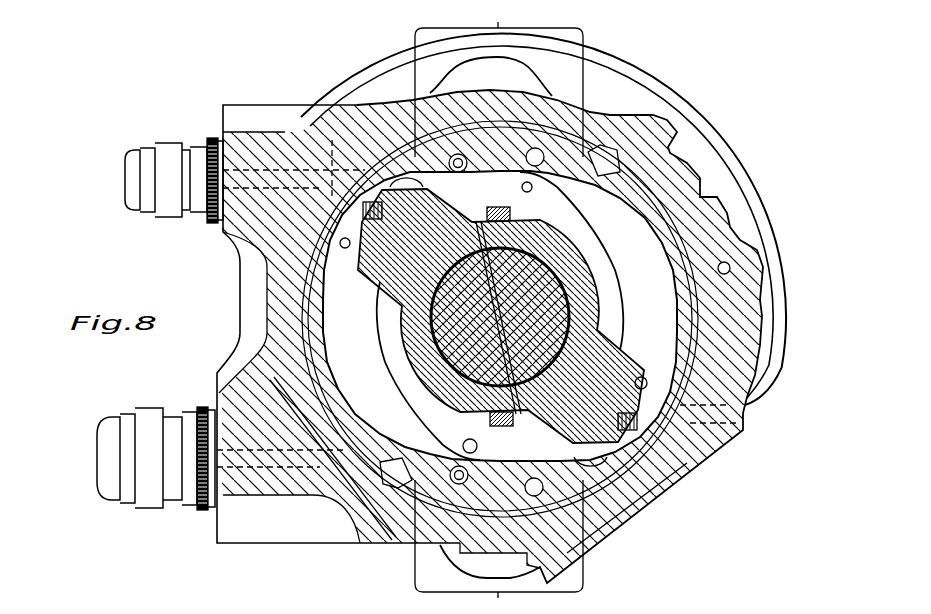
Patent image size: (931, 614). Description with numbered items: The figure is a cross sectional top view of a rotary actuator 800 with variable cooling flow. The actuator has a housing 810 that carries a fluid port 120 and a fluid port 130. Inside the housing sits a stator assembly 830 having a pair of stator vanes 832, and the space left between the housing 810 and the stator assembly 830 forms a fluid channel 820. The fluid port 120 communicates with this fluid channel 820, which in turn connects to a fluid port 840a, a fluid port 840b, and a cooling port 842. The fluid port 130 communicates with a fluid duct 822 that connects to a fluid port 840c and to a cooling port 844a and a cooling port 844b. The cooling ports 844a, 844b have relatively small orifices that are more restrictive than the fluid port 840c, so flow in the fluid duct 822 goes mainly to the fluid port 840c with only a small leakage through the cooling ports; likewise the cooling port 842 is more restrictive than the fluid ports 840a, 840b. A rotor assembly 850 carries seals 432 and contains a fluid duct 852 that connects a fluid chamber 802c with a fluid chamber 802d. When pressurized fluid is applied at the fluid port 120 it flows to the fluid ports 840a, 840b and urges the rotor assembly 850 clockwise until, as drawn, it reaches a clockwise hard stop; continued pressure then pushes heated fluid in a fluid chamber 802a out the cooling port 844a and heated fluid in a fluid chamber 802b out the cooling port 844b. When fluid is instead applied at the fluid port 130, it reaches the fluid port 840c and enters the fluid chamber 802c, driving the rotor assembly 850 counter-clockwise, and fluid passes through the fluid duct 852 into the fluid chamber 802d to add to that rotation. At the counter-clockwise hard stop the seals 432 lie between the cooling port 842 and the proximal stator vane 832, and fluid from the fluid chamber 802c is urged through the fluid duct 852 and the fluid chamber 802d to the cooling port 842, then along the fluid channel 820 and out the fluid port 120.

The rotary actuator 800 is at (178, 101).
The fluid port 120 is at (100, 468).
The fluid port 130 is at (125, 180).
The housing 810 is at (262, 105).
The fluid channel 820 is at (410, 480).
The fluid duct 822 is at (706, 130).
The stator assembly 830 is at (597, 498).
The stator vanes 832 is at (499, 307).
The fluid port 840a is at (405, 492).
The fluid port 840b is at (596, 158).
The fluid port 840c is at (407, 176).
The cooling port 842 is at (645, 198).
The cooling port 844a is at (390, 176).
The cooling port 844b is at (658, 398).
The fluid chamber 802a is at (342, 335).
The fluid chamber 802b is at (653, 296).
The fluid chamber 802c is at (398, 168).
The fluid chamber 802d is at (640, 510).
The rotor assembly 850 is at (570, 250).
The fluid duct 852 is at (508, 304).
The seals 432 is at (347, 250).